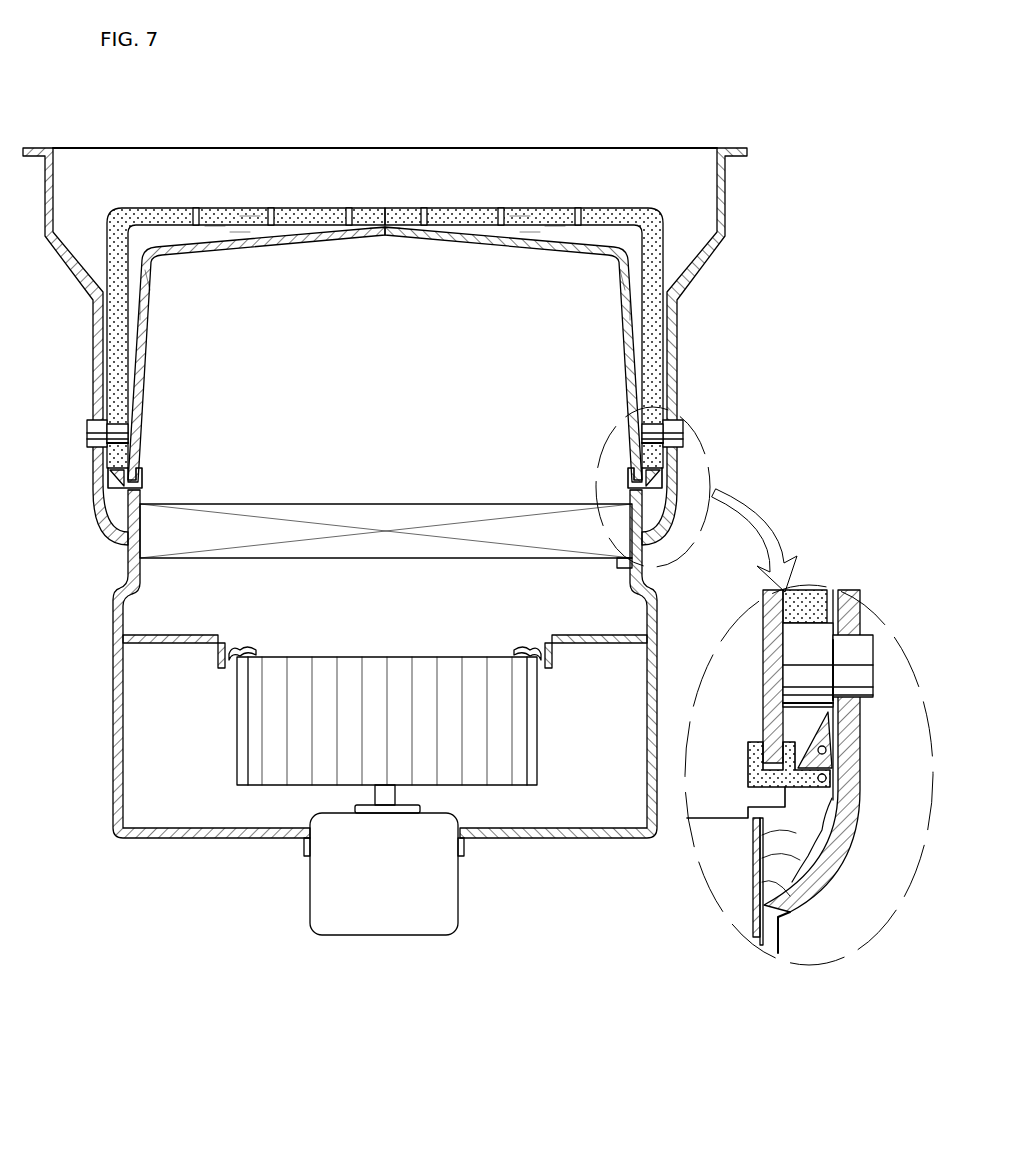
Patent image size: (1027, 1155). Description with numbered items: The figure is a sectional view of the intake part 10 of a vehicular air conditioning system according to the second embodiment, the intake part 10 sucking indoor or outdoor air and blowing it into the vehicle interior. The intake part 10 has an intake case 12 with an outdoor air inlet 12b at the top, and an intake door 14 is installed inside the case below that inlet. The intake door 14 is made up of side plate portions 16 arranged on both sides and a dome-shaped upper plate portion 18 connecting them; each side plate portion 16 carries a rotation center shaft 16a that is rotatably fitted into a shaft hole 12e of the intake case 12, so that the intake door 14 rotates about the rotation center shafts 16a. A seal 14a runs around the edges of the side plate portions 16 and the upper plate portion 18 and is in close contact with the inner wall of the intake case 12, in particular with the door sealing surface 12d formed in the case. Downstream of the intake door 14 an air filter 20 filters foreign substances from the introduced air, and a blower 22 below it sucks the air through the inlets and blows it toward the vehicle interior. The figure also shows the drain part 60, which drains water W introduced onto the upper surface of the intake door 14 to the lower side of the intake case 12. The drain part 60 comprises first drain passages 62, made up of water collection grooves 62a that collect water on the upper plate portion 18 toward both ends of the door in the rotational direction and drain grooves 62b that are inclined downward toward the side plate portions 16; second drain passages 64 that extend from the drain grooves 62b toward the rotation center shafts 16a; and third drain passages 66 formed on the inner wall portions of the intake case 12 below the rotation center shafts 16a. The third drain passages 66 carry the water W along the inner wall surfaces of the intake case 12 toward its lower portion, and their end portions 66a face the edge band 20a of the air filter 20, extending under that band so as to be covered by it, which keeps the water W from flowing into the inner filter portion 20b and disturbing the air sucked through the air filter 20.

The intake part 10 is at (612, 118).
The intake case 12 is at (853, 760).
The outdoor air inlet 12b is at (436, 173).
The door sealing surface 12d is at (112, 478).
The shaft hole 12e is at (845, 690).
The intake door 14 is at (298, 212).
The seal 14a is at (165, 212).
The side plate portion 16 is at (143, 345).
The rotation center shaft 16a is at (90, 418).
The upper plate portion 18 is at (424, 240).
The air filter 20 is at (133, 552).
The edge band 20a is at (762, 930).
The inner filter portion 20b is at (755, 925).
The blower 22 is at (250, 772).
The drain part 60 is at (312, 325).
The first drain passage 62 is at (326, 311).
The water collection groove 62a is at (252, 218).
The drain groove 62b is at (213, 232).
The second drain passage 64 is at (135, 276).
The third drain passage 66 is at (143, 502).
The end portion 66a is at (772, 872).
The water W is at (805, 880).